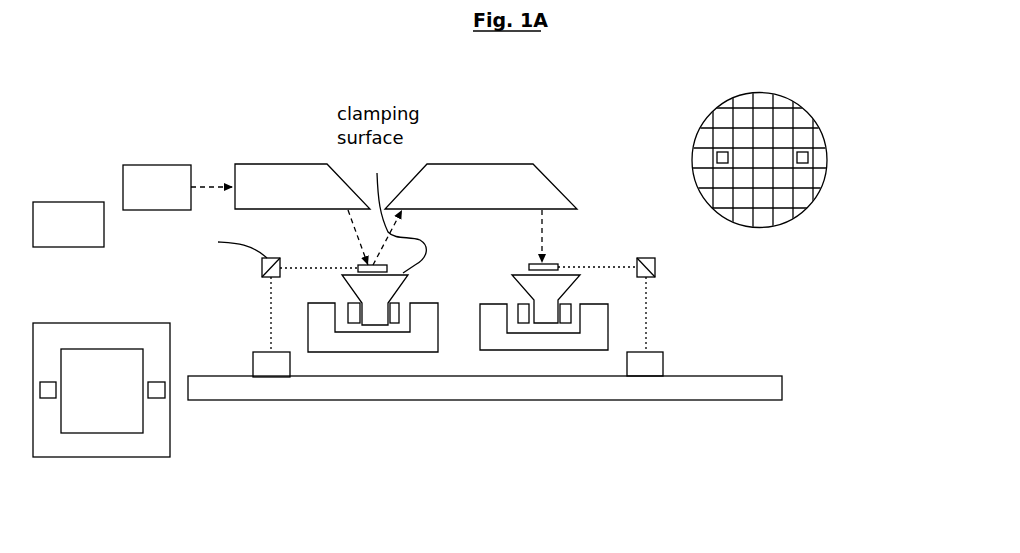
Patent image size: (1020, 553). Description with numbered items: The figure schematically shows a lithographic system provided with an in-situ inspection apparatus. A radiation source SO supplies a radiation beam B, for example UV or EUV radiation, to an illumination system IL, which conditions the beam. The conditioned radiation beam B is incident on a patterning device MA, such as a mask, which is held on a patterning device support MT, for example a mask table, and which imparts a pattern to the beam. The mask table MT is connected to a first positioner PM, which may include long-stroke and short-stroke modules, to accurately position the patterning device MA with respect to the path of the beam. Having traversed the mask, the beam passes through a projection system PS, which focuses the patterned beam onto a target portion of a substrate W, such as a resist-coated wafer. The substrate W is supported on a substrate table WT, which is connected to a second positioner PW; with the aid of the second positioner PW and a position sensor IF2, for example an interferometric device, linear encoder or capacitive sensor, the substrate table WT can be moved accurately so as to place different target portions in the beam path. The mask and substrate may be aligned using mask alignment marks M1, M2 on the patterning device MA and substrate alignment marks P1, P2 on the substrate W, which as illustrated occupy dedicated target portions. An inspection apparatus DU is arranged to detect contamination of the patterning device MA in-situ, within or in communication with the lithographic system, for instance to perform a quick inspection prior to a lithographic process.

The radiation source SO is at (157, 187).
The inspection apparatus DU is at (68, 224).
The illumination system IL is at (302, 186).
The projection system PS is at (481, 186).
The radiation beam B is at (357, 238).
The patterning device MA is at (80, 323).
The mask alignment mark M1 is at (157, 398).
The mask alignment mark M2 is at (47, 398).
The patterning device support MT is at (368, 325).
The first positioner PM is at (403, 351).
The substrate W is at (692, 188).
The substrate table WT is at (542, 323).
The second positioner PW is at (572, 350).
The position sensor IF2 is at (657, 268).
The substrate alignment mark P1 is at (723, 163).
The substrate alignment mark P2 is at (803, 163).